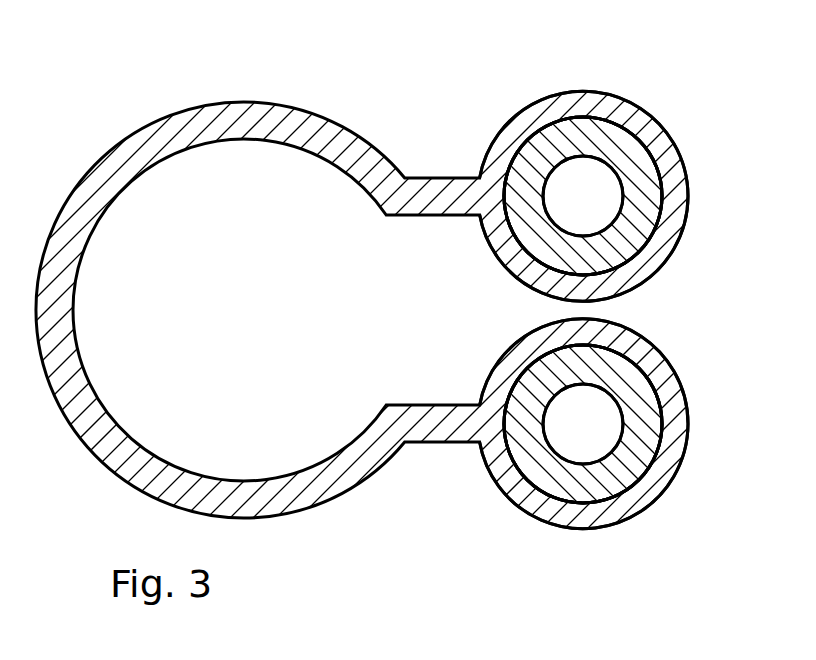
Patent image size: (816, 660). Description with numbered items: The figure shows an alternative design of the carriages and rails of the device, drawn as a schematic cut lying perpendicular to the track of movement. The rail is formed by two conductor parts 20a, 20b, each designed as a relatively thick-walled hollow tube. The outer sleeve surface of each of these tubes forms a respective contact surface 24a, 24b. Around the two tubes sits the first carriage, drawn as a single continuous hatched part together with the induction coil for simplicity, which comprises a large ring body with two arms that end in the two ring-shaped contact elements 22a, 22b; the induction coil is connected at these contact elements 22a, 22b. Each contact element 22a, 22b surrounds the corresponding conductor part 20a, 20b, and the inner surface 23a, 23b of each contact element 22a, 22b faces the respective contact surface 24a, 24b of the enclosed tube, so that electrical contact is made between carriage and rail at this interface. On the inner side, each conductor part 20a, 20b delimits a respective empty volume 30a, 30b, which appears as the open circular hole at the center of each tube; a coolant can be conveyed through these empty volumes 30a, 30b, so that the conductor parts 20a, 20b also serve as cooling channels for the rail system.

The conductor part 20a is at (635, 168).
The conductor part 20b is at (603, 372).
The contact element 22a is at (510, 136).
The contact element 22b is at (510, 367).
The inner surface of first ring 23a is at (549, 140).
The inner surface of second ring 23b is at (632, 465).
The contact surface 24a is at (614, 118).
The contact surface 24b is at (648, 376).
The empty volume 30a is at (597, 193).
The empty volume 30b is at (582, 422).